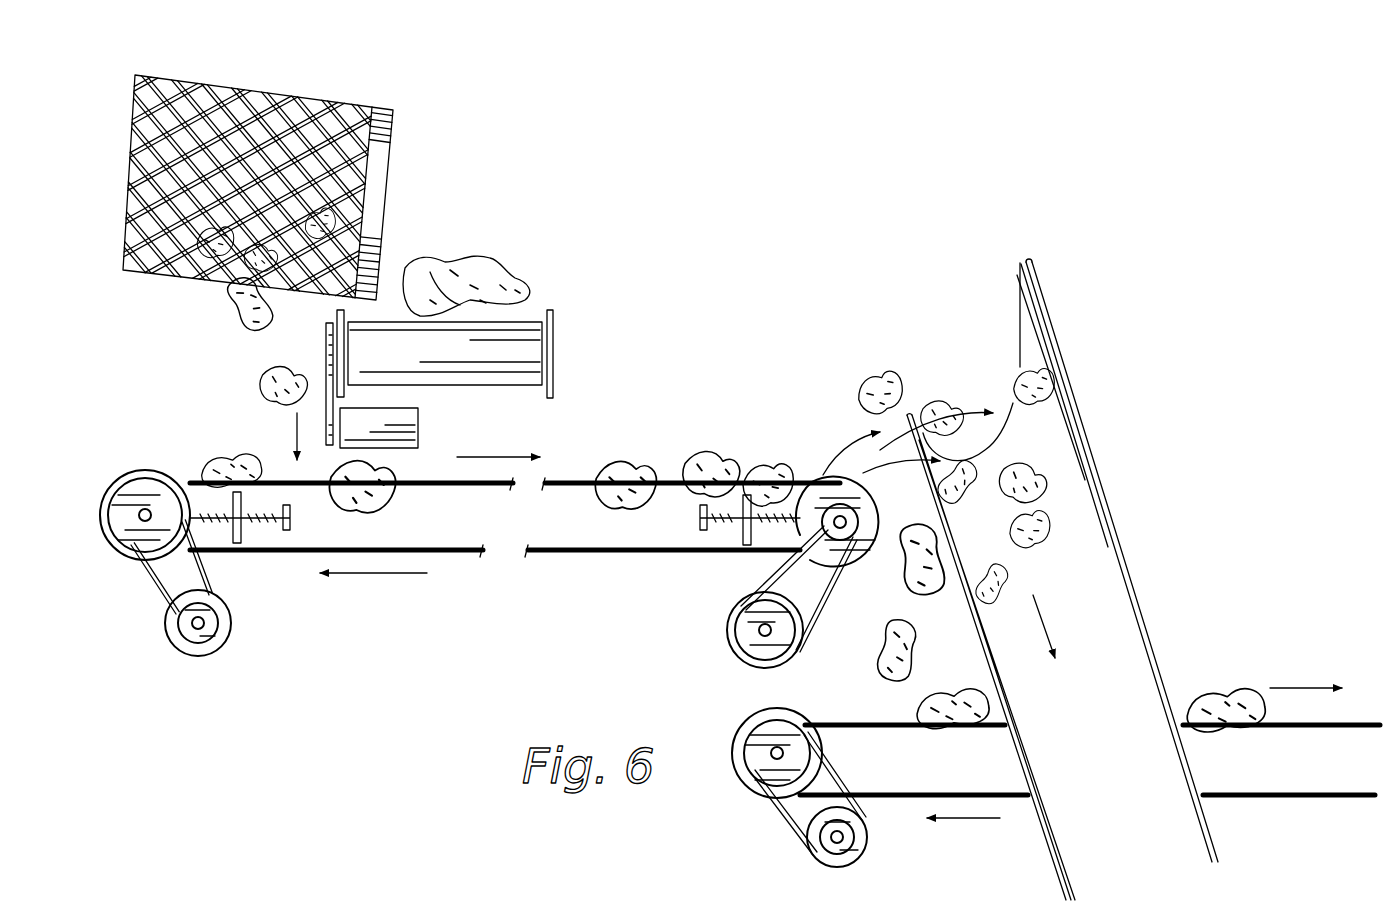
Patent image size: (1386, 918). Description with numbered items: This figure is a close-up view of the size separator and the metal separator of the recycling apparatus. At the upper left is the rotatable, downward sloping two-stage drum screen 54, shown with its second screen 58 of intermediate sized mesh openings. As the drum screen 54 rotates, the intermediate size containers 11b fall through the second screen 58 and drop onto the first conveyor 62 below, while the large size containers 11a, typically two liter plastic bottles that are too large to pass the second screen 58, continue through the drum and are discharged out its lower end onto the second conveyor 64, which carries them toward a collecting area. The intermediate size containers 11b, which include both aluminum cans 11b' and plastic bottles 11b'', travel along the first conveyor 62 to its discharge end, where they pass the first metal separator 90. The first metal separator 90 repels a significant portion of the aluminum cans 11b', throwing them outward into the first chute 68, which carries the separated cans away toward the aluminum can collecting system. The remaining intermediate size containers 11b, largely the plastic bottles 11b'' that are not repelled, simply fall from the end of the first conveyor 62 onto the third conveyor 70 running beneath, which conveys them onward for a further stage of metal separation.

The two-stage drum screen 54 is at (356, 83).
The second screen 58 is at (265, 60).
The large size containers 11a is at (462, 258).
The intermediate size containers 11b is at (476, 395).
The aluminum cans 11b' is at (955, 467).
The plastic bottles 11b'' is at (894, 673).
The second conveyor 64 is at (562, 320).
The first conveyor 62 is at (458, 566).
The first metal separator 90 is at (820, 456).
The first chute 68 is at (1080, 507).
The third conveyor 70 is at (1297, 718).